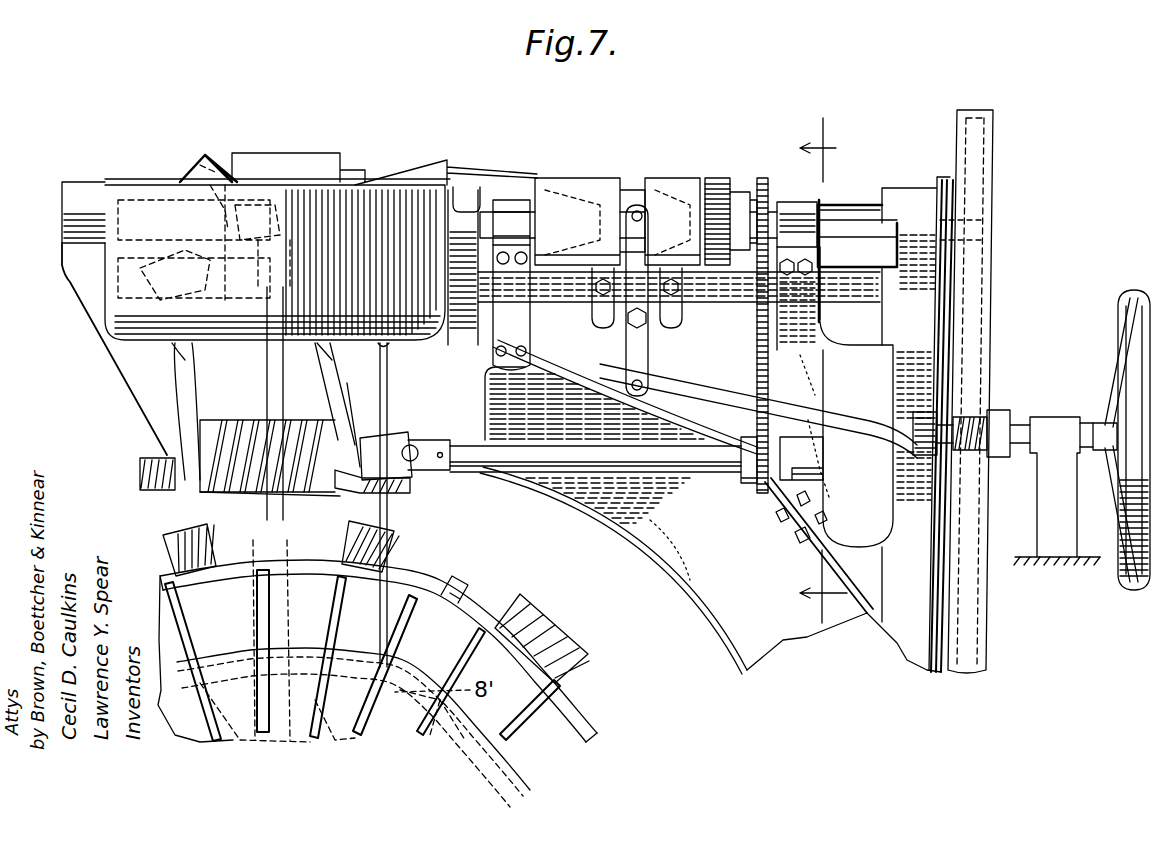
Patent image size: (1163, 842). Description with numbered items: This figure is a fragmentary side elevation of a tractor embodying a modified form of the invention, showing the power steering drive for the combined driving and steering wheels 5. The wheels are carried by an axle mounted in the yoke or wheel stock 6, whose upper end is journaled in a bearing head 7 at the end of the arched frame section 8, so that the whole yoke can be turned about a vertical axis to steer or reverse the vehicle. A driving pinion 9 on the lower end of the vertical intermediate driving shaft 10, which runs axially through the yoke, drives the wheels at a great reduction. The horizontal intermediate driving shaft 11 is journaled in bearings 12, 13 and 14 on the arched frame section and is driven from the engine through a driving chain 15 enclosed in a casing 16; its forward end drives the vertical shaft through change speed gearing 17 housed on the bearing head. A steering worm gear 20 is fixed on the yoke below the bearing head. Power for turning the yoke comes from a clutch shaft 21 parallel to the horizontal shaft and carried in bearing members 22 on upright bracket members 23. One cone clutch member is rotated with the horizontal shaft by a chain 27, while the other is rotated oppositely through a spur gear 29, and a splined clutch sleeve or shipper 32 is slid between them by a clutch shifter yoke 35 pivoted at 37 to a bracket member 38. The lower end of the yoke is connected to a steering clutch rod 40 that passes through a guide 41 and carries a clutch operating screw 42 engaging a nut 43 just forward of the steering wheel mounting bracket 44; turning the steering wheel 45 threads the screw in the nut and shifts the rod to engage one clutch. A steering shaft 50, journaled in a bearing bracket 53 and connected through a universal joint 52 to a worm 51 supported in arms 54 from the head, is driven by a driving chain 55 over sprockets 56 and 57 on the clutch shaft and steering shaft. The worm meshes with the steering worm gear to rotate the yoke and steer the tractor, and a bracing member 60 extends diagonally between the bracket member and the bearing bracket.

The combined driving and steering wheels 5 is at (525, 667).
The yoke or wheel stock 6 is at (372, 515).
The bearing head 7 is at (152, 378).
The arched frame section 8 is at (660, 528).
The driving pinion 9 is at (295, 690).
The vertical intermediate driving shaft 10 is at (278, 596).
The horizontal intermediate driving shaft 11 is at (490, 210).
The bearing 12 is at (82, 206).
The bearing 13 is at (470, 207).
The bearing 14 is at (896, 205).
The driving chain 15 is at (988, 178).
The casing 16 is at (118, 297).
The change speed gearing 17 is at (236, 172).
The steering worm gear 20 is at (165, 458).
The clutch shaft 21 is at (828, 240).
The bearing members 22 is at (512, 205).
The bracket member 23 is at (492, 355).
The chain 27 is at (576, 178).
The spur gear 29 is at (714, 184).
The clutch sleeve or shipper 32 is at (664, 158).
The clutch shifter yoke 35 is at (630, 330).
The pivot 37 is at (650, 340).
The bracket member 38 is at (656, 308).
The steering clutch rod 40 is at (734, 396).
The guide 41 is at (918, 442).
The clutch operating screw 42 is at (965, 425).
The clutch operating nut 43 is at (1000, 418).
The steering wheel mounting bracket 44 is at (1058, 513).
The steering wheel 45 is at (1128, 306).
The steering shaft 50 is at (543, 460).
The worm 51 is at (296, 488).
The universal joint 52 is at (398, 435).
The bearing bracket 53 is at (812, 478).
The arms 54 is at (345, 413).
The driving chain 55 is at (810, 347).
The sprocket 56 is at (762, 180).
The sprocket 57 is at (752, 484).
The bracing member 60 is at (806, 378).